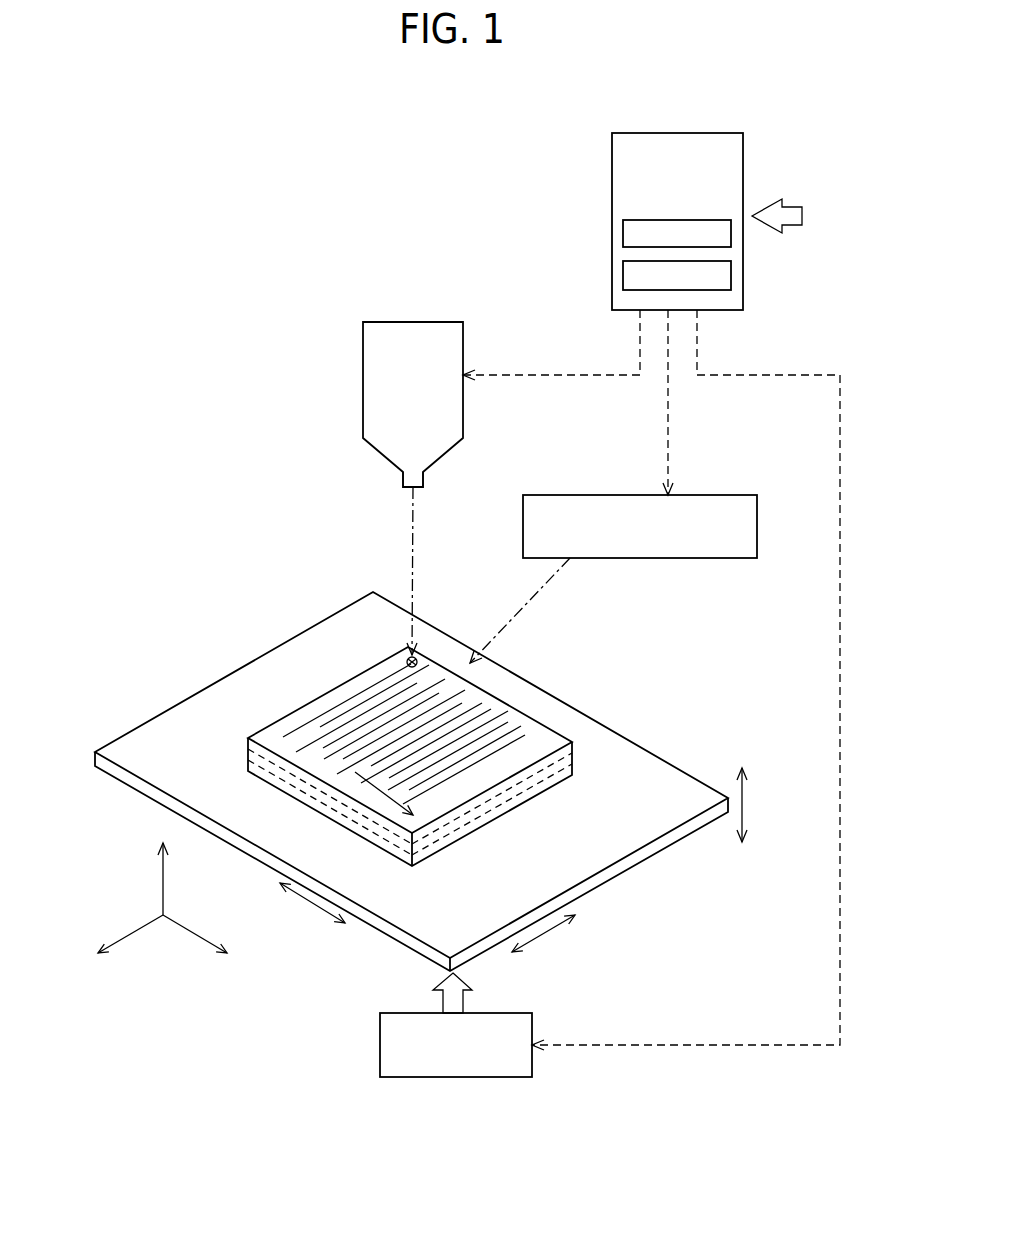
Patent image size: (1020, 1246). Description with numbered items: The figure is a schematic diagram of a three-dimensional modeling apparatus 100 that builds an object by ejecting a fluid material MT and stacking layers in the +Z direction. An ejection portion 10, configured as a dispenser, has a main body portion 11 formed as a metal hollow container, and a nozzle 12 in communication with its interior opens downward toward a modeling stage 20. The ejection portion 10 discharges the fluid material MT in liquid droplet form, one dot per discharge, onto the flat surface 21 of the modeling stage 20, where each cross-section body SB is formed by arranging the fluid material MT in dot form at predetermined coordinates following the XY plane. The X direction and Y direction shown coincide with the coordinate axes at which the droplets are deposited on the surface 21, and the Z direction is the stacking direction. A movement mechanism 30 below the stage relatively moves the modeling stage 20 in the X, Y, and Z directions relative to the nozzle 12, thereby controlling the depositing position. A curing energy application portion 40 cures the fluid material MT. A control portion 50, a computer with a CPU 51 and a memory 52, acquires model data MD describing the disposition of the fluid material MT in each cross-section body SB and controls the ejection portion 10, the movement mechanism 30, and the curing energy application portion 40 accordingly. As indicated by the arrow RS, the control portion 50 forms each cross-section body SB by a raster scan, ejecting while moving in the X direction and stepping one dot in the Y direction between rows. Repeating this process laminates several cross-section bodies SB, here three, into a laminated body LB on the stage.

The three-dimensional modeling apparatus 100 is at (152, 185).
The ejection portion 10 is at (440, 386).
The main body portion 11 is at (465, 340).
The nozzle 12 is at (416, 489).
The modeling stage 20 is at (411, 781).
The surface 21 is at (195, 694).
The movement mechanism 30 is at (505, 1013).
The curing energy application portion 40 is at (694, 495).
The control portion 50 is at (730, 133).
The CPU 51 is at (732, 235).
The memory 52 is at (732, 277).
The model data MD is at (797, 216).
The fluid material MT is at (410, 655).
The laminated body LB is at (479, 755).
The cross-section body SB is at (573, 752).
The raster scan RS is at (374, 791).
The X direction X is at (205, 943).
The Y direction Y is at (119, 943).
The Z direction Z is at (162, 865).